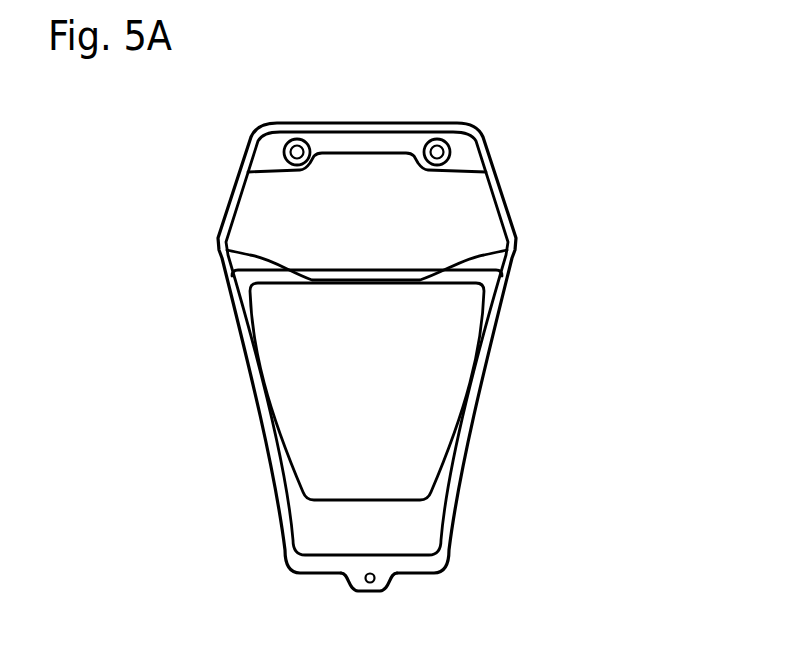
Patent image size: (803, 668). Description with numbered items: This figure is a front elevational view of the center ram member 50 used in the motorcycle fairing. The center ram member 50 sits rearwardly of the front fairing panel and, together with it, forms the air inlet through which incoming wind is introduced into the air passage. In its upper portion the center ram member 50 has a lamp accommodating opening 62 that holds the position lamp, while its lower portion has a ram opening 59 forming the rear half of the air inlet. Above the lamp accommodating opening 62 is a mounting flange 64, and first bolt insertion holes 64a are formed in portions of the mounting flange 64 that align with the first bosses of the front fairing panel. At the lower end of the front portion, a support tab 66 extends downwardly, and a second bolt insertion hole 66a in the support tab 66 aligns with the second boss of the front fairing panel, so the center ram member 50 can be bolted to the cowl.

The center ram member 50 is at (519, 168).
The ram opening 59 is at (278, 386).
The lamp accommodating opening 62 is at (244, 212).
The mounting flange 64 is at (368, 137).
The first bolt insertion holes 64a is at (297, 140).
The support tab 66 is at (351, 583).
The second bolt insertion hole 66a is at (375, 587).